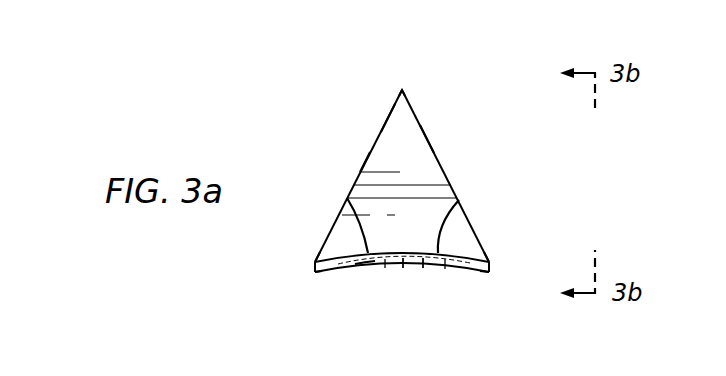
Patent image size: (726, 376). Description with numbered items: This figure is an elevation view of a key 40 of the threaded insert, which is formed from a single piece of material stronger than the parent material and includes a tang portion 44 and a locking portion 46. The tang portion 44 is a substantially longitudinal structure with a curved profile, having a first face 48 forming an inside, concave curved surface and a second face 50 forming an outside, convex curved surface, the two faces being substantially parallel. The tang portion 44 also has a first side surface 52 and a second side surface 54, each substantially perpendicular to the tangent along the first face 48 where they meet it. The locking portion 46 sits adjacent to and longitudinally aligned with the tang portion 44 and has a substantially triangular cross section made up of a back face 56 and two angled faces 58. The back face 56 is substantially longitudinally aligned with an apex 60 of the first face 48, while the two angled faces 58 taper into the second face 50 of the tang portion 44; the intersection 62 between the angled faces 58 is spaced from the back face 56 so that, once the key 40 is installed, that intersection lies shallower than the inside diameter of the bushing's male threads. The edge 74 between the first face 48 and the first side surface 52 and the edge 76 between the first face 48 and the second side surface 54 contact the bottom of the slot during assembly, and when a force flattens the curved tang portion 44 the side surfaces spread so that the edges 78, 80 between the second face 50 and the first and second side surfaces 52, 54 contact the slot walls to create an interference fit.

The key 40 is at (336, 97).
The tang portion 44 is at (347, 198).
The locking portion 46 is at (388, 117).
The first face 48 is at (450, 266).
The second face 50 is at (459, 200).
The first side surface 52 is at (315, 263).
The second side surface 54 is at (490, 262).
The back face 56 is at (362, 269).
The angled faces 58 is at (428, 135).
The apex 60 is at (406, 264).
The intersection 62 is at (402, 90).
The edge 74 is at (315, 272).
The edge 76 is at (492, 271).
The edge 78 is at (315, 262).
The edge 80 is at (493, 262).